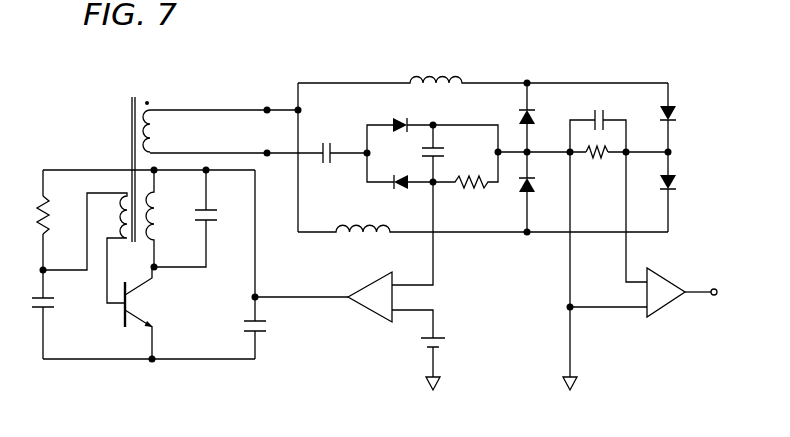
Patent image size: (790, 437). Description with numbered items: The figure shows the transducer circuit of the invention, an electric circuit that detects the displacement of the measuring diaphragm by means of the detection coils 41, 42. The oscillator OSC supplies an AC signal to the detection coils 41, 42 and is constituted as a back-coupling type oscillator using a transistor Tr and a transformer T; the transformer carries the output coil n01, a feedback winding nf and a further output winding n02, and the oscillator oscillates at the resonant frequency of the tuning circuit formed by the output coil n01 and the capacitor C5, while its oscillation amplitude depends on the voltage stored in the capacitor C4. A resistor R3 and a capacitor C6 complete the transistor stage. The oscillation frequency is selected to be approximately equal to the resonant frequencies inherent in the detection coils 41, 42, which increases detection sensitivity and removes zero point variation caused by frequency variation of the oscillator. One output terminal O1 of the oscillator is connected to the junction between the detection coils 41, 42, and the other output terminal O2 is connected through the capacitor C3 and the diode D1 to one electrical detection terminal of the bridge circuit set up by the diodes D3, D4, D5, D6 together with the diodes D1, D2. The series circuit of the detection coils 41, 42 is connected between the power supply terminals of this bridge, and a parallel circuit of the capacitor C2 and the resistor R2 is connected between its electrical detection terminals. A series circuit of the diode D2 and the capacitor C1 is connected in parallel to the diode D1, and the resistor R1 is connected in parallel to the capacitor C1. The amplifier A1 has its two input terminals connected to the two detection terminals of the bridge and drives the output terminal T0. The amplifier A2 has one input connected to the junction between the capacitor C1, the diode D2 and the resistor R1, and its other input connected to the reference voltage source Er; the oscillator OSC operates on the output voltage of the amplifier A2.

The detection coil 41 is at (444, 76).
The detection coil 42 is at (355, 238).
The oscillator OSC is at (100, 149).
The transformer T is at (130, 106).
The output coil n02 is at (150, 132).
The output coil n01 is at (167, 219).
The feedback coil nf is at (117, 222).
The resistor R3 is at (57, 212).
The capacitor C6 is at (57, 311).
The capacitor C5 is at (218, 222).
The capacitor C4 is at (267, 336).
The transistor Tr is at (140, 312).
The output terminal O1 is at (267, 96).
The output terminal O2 is at (267, 171).
The capacitor C3 is at (333, 165).
The diode D1 is at (400, 119).
The diode D2 is at (407, 189).
The capacitor C1 is at (445, 150).
The resistor R1 is at (485, 186).
The diode D3 is at (532, 112).
The diode D4 is at (532, 196).
The diode D5 is at (676, 112).
The diode D6 is at (676, 182).
The capacitor C2 is at (606, 110).
The resistor R2 is at (601, 166).
The amplifier A1 is at (657, 313).
The amplifier A2 is at (373, 310).
The reference voltage source Er is at (450, 338).
The output terminal T0 is at (714, 288).